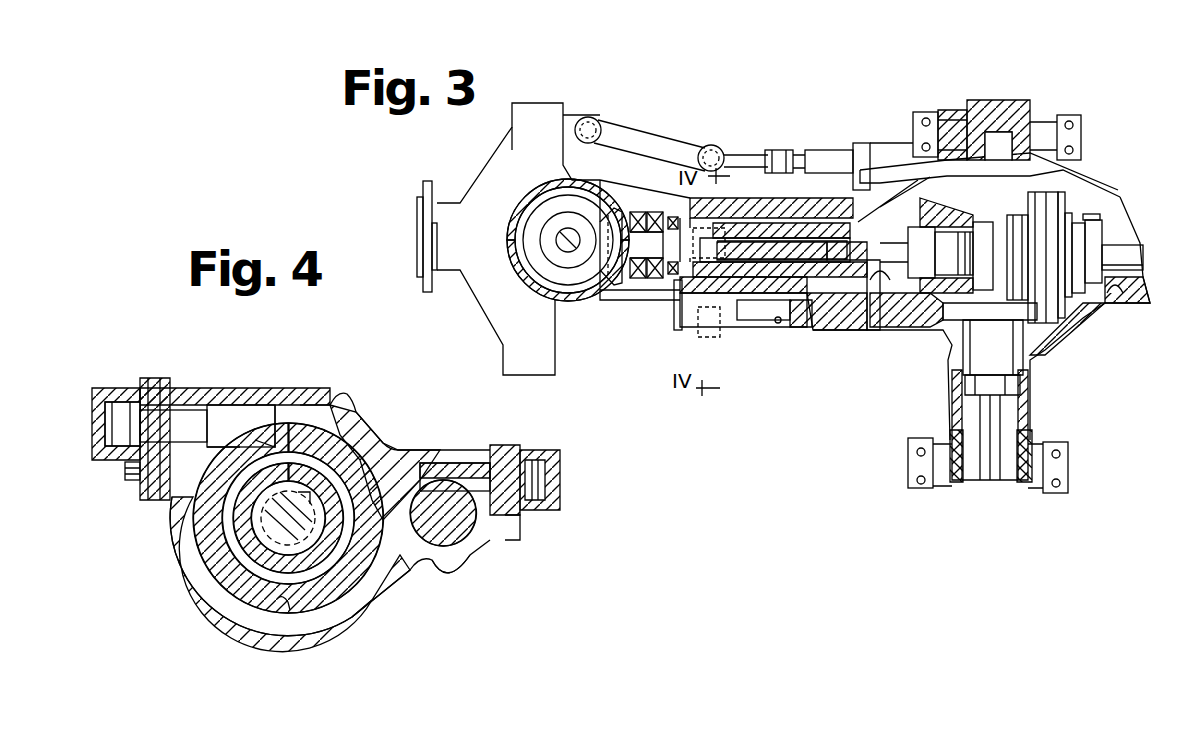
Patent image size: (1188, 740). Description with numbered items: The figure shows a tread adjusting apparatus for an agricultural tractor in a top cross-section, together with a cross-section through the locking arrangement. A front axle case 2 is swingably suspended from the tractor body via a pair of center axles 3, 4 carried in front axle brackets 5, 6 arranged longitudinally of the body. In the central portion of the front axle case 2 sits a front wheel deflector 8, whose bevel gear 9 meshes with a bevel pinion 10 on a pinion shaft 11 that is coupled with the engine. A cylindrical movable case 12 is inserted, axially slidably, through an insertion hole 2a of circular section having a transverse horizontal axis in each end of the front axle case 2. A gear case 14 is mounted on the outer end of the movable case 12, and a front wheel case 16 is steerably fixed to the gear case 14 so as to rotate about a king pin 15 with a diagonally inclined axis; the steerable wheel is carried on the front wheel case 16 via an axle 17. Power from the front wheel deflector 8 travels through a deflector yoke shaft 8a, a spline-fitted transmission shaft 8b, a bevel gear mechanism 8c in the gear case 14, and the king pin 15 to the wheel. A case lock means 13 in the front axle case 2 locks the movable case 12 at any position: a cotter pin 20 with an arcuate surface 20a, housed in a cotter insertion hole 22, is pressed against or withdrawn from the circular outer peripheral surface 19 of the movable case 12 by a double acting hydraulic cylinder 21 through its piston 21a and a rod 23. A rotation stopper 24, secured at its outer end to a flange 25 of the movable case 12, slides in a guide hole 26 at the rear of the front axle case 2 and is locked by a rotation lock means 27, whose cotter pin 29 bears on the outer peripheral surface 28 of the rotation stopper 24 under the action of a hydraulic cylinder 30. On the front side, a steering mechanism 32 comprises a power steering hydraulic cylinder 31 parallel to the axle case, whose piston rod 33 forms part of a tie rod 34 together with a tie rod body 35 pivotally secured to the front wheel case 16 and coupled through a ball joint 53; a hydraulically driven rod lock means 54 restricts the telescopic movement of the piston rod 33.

In FIG. 3, the front axle case 2 is at (876, 307).
In FIG. 4, the front axle case 2 is at (350, 625).
In FIG. 4, the insertion hole 2a is at (283, 606).
In FIG. 3, the center axle 3 is at (1020, 122).
In FIG. 3, the center axle 4 is at (1020, 420).
In FIG. 3, the mounting bracket 5 is at (963, 135).
In FIG. 3, the bottom mounting bracket 6 is at (960, 476).
In FIG. 3, the front wheel deflector 8 is at (1084, 206).
In FIG. 3, the deflector yoke shaft 8a is at (845, 262).
In FIG. 3, the transmission shaft 8b is at (822, 270).
In FIG. 3, the bevel gear mechanism 8c is at (575, 290).
In FIG. 3, the bevel gear 9 is at (1050, 205).
In FIG. 3, the bevel pinion 10 is at (958, 318).
In FIG. 3, the pinion shaft 11 is at (1008, 365).
In FIG. 3, the movable case 12 is at (760, 280).
In FIG. 4, the movable case 12 is at (228, 578).
In FIG. 3, the case lock means 13 is at (720, 214).
In FIG. 4, the case lock means 13 is at (264, 372).
In FIG. 3, the gear case 14 is at (610, 295).
In FIG. 3, the king pin 15 is at (560, 248).
In FIG. 3, the front wheel case 16 is at (480, 195).
In FIG. 3, the axle 17 is at (430, 258).
In FIG. 4, the outer peripheral surface 19 is at (338, 405).
In FIG. 4, the cotter pin 20 is at (218, 430).
In FIG. 4, the arcuate surface 20a is at (268, 432).
In FIG. 4, the hydraulic cylinder 21 is at (97, 447).
In FIG. 4, the piston 21a is at (118, 414).
In FIG. 4, the cotter insertion hole 22 is at (182, 395).
In FIG. 4, the rod 23 is at (160, 488).
In FIG. 3, the rotation stopper 24 is at (742, 310).
In FIG. 4, the rotation stopper 24 is at (452, 548).
In FIG. 3, the flange 25 is at (670, 318).
In FIG. 3, the guide hole 26 is at (786, 318).
In FIG. 4, the guide hole 26 is at (432, 562).
In FIG. 3, the rotation lock means 27 is at (710, 340).
In FIG. 4, the rotation lock means 27 is at (531, 444).
In FIG. 4, the outer peripheral surface 28 is at (470, 530).
In FIG. 4, the cotter pin 29 is at (474, 470).
In FIG. 4, the hydraulic cylinder 30 is at (560, 486).
In FIG. 3, the hydraulic cylinder 31 is at (865, 143).
In FIG. 3, the steering mechanism 32 is at (896, 124).
In FIG. 3, the piston rod 33 is at (828, 158).
In FIG. 3, the tie rod 34 is at (625, 116).
In FIG. 3, the tie rod body 35 is at (653, 140).
In FIG. 3, the ball joint 53 is at (712, 145).
In FIG. 3, the rod lock means 54 is at (780, 150).